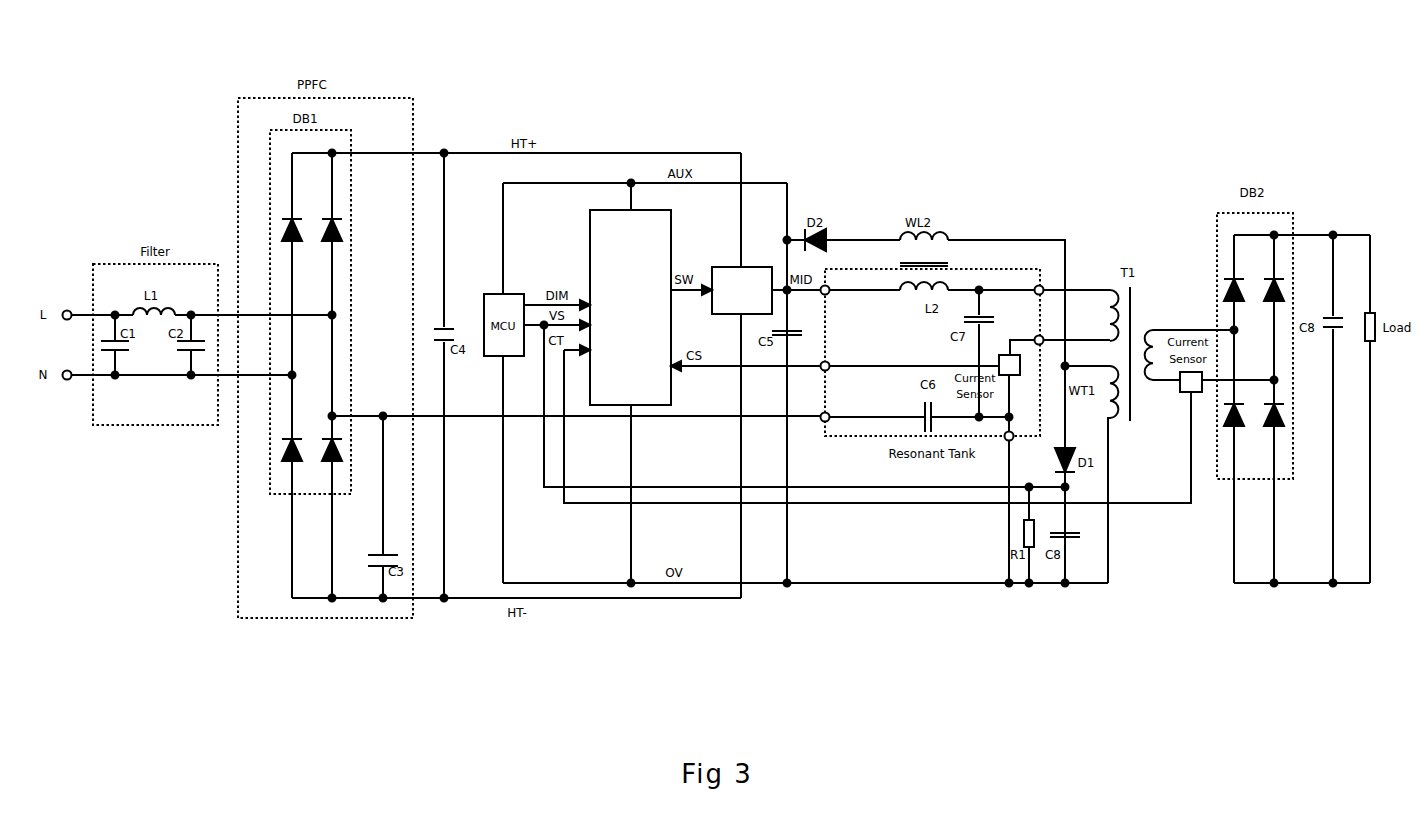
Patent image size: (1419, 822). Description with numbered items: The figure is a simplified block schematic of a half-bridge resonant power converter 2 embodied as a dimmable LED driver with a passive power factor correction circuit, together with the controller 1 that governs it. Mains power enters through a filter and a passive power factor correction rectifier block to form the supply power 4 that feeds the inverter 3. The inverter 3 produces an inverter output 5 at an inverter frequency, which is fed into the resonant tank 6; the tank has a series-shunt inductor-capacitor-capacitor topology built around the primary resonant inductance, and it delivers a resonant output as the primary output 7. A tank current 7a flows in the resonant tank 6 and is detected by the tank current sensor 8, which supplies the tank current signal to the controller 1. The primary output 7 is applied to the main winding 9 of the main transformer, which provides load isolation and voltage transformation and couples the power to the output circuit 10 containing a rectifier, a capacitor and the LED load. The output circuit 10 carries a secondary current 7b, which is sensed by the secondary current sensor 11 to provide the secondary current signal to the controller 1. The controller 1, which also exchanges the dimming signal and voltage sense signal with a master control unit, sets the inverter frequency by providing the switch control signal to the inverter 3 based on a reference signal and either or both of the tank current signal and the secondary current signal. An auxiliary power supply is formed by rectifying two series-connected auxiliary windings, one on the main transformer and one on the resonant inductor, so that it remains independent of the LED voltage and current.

The controller 1 is at (630, 307).
The power converter 2 is at (1243, 374).
The inverter 3 is at (735, 267).
The supply power 4 is at (514, 79).
The inverter output 5 is at (782, 288).
The resonant tank 6 is at (852, 437).
The primary output 7 is at (1152, 281).
The tank current 7a is at (1100, 270).
The secondary current 7b is at (1184, 301).
The tank current sensor 8 is at (998, 357).
The main winding 9 is at (1130, 293).
The output circuit 10 is at (1179, 656).
The secondary current sensor 11 is at (1167, 404).